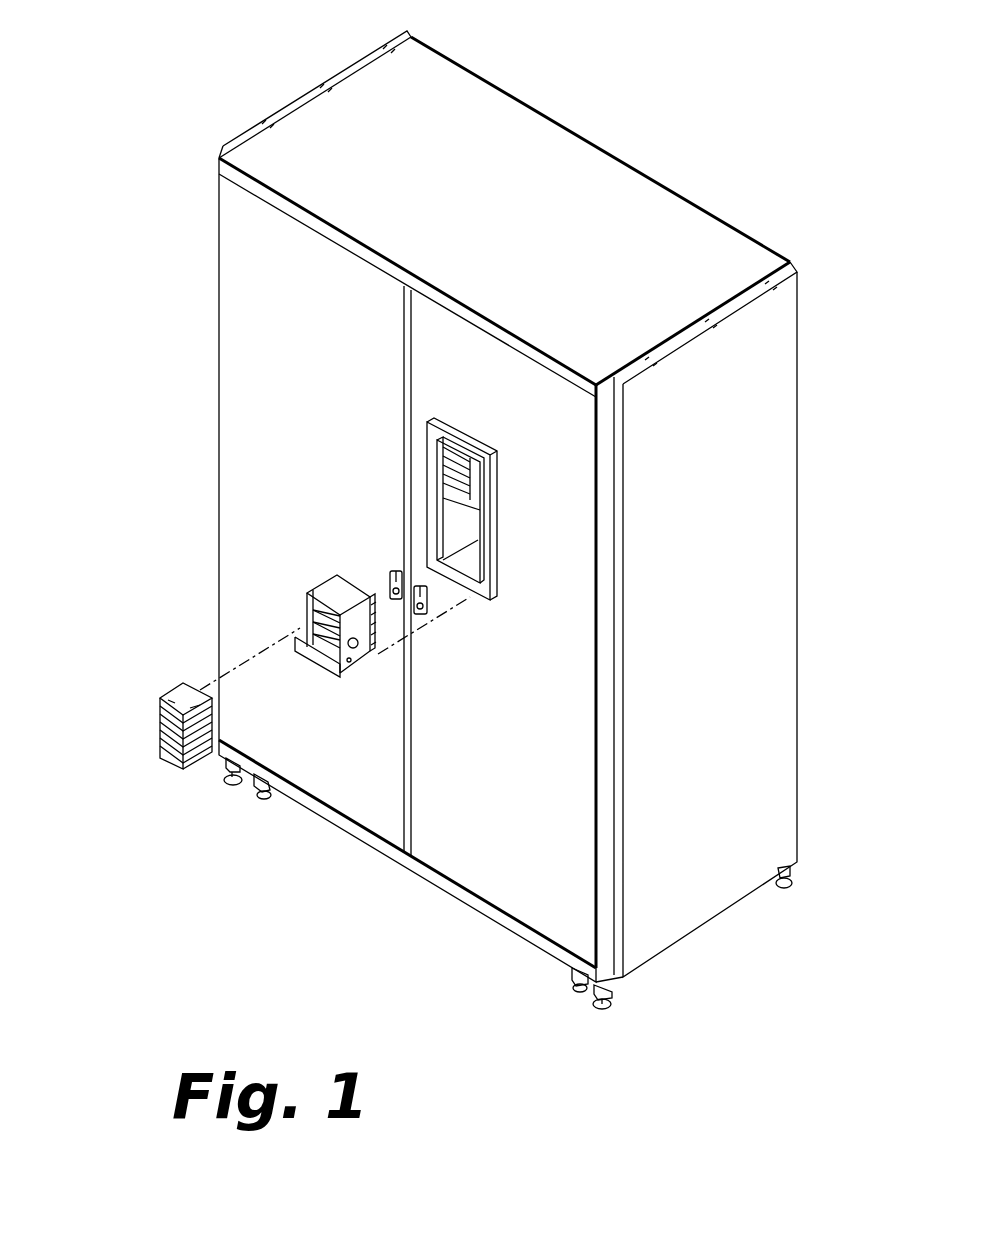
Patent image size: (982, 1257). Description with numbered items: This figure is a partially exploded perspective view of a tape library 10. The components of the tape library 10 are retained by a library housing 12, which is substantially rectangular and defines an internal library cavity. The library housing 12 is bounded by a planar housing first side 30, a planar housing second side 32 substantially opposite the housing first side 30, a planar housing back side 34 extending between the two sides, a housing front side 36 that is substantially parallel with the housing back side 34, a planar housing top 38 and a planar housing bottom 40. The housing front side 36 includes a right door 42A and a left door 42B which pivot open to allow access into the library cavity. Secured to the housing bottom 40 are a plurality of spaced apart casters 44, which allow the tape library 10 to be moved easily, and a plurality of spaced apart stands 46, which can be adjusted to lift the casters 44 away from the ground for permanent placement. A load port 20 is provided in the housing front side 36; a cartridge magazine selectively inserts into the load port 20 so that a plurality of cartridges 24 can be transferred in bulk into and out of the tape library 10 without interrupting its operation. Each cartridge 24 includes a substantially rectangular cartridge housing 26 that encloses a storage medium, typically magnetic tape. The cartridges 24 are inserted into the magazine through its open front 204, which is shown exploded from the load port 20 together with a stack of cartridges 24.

The tape library 10 is at (562, 99).
The library housing 12 is at (690, 233).
The load port 20 is at (432, 465).
The cartridge 24 is at (158, 703).
The cartridge housing 26 is at (180, 693).
The housing first side 30 is at (270, 117).
The housing second side 32 is at (747, 519).
The housing back side 34 is at (768, 242).
The housing front side 36 is at (275, 361).
The housing top 38 is at (618, 188).
The housing bottom 40 is at (545, 951).
The right door 42A is at (480, 856).
The left door 42B is at (350, 802).
The caster 44 is at (265, 796).
The stand 46 is at (230, 781).
The open front 204 is at (305, 627).